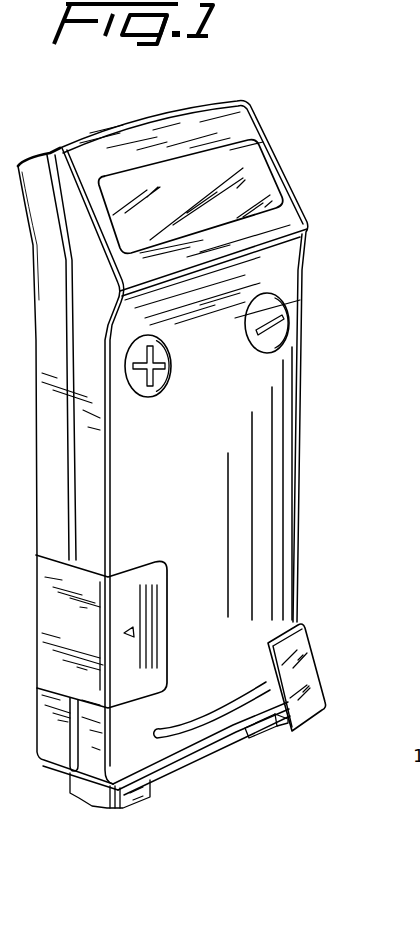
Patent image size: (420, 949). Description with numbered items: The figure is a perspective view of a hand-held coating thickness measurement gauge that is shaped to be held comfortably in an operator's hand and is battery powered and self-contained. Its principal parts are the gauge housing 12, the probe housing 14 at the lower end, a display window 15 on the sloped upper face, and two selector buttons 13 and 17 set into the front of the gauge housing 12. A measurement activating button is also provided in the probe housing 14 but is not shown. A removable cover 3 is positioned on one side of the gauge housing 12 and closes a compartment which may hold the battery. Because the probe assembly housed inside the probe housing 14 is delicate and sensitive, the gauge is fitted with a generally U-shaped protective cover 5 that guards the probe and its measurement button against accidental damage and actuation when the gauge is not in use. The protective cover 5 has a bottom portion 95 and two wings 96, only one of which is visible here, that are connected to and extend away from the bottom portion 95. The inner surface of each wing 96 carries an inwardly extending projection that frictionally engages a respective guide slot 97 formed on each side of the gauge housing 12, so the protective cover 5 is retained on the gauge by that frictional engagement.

The gauge housing 12 is at (260, 485).
The display window 15 is at (250, 185).
The selector button 17 is at (163, 377).
The selector button 13 is at (290, 323).
The removable cover 3 is at (145, 578).
The guide slot 97 is at (190, 727).
The wing 96 is at (308, 668).
The protective cover 5 is at (325, 690).
The bottom portion 95 is at (267, 733).
The probe housing 14 is at (151, 797).